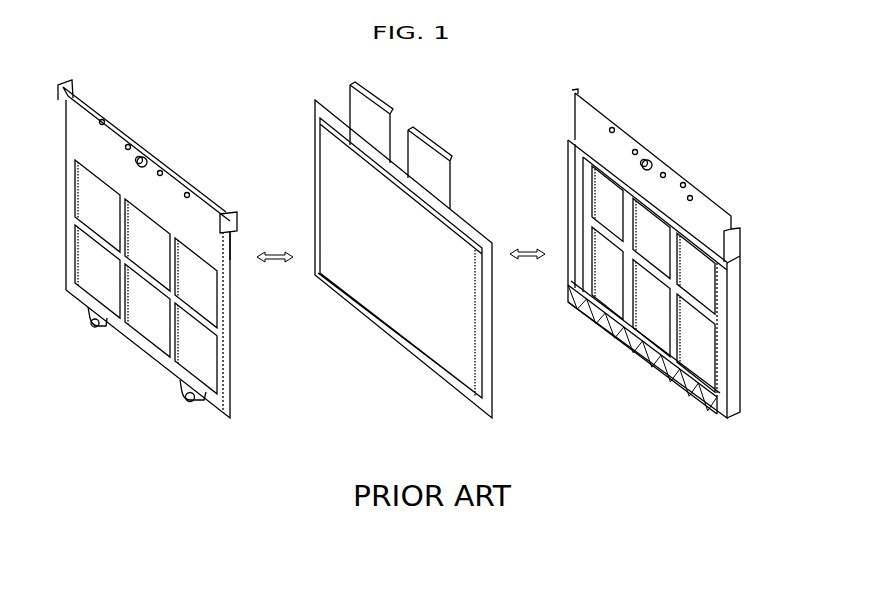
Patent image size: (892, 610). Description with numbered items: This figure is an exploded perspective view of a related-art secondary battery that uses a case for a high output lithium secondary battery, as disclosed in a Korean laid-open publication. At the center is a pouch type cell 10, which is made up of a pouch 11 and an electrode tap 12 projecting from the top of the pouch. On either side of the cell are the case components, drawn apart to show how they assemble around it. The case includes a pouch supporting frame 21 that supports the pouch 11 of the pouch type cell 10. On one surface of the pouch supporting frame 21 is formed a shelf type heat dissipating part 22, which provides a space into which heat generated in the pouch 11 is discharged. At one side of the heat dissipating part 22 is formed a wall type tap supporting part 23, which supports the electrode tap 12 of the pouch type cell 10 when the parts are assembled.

The pouch type cell 10 is at (418, 250).
The pouch 11 is at (460, 255).
The electrode tap 12 is at (401, 145).
The pouch supporting frame 21 is at (241, 290).
The shelf type heat dissipating part 22 is at (242, 231).
The wall type tap supporting part 23 is at (153, 154).